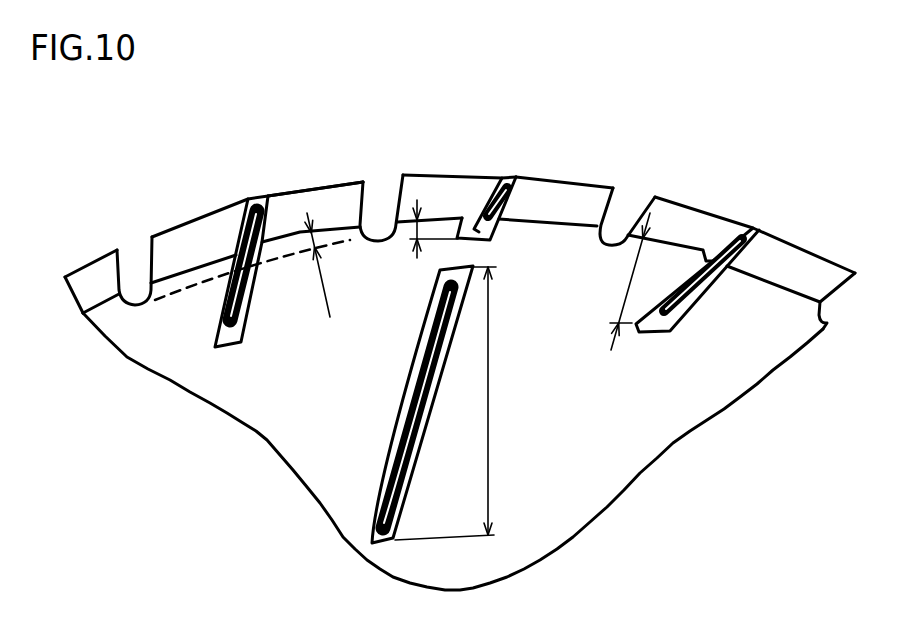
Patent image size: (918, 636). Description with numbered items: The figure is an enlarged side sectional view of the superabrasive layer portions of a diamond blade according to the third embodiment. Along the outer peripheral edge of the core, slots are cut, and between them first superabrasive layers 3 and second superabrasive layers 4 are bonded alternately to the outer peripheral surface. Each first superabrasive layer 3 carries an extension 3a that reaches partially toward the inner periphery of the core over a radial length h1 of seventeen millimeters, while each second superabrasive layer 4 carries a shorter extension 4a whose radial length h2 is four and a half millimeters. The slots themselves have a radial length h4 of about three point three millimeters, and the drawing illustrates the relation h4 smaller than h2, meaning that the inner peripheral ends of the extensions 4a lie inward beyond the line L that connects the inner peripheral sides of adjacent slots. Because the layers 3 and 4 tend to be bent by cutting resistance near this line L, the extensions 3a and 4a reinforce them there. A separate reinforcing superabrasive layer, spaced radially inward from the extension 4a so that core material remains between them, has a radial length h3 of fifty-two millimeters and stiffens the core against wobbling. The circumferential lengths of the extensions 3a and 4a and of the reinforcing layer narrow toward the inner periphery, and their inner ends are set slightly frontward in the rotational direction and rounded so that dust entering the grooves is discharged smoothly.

The first superabrasive layer 3 is at (337, 188).
The second superabrasive layer 4 is at (584, 198).
The extension 3a is at (677, 282).
The extension 4a is at (502, 236).
The yoke boundary line L is at (187, 272).
The radial length h1 is at (620, 281).
The radial length h2 is at (420, 245).
The radial length h3 is at (445, 403).
The radial length h4 is at (307, 265).